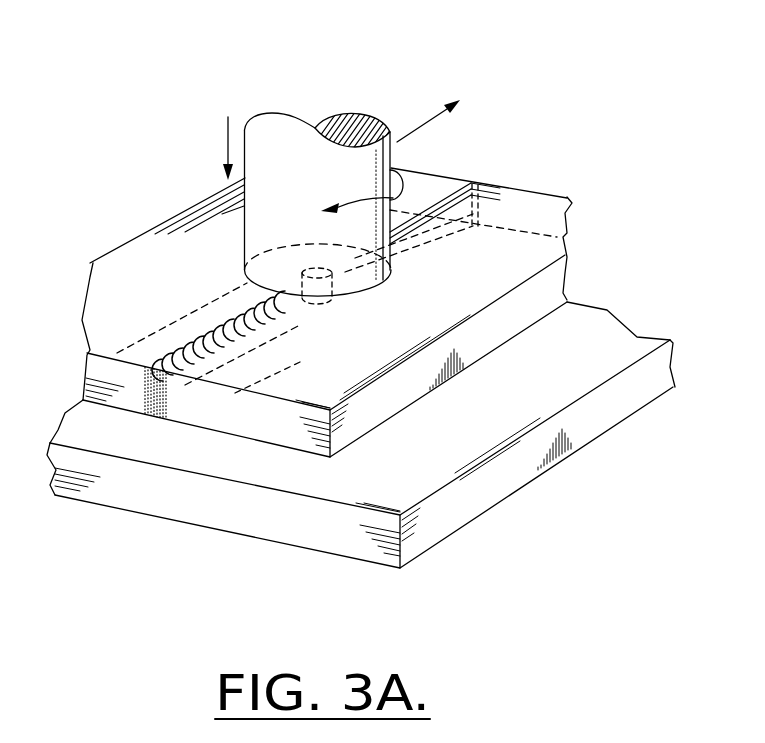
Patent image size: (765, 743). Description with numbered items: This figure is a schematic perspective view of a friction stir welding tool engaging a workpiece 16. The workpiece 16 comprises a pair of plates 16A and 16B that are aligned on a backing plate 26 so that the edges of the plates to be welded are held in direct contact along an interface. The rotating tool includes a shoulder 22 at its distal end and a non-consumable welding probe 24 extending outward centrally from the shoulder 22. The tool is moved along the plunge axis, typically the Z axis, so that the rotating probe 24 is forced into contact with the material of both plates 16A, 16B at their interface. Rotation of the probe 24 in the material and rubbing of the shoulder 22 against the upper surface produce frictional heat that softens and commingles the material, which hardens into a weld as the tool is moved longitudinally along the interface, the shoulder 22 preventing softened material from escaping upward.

The workpiece 16 is at (280, 49).
The plate 16A is at (147, 233).
The plate 16B is at (513, 188).
The shoulder 22 is at (387, 270).
The non-consumable welding probe 24 is at (327, 302).
The backing plate 26 is at (528, 480).